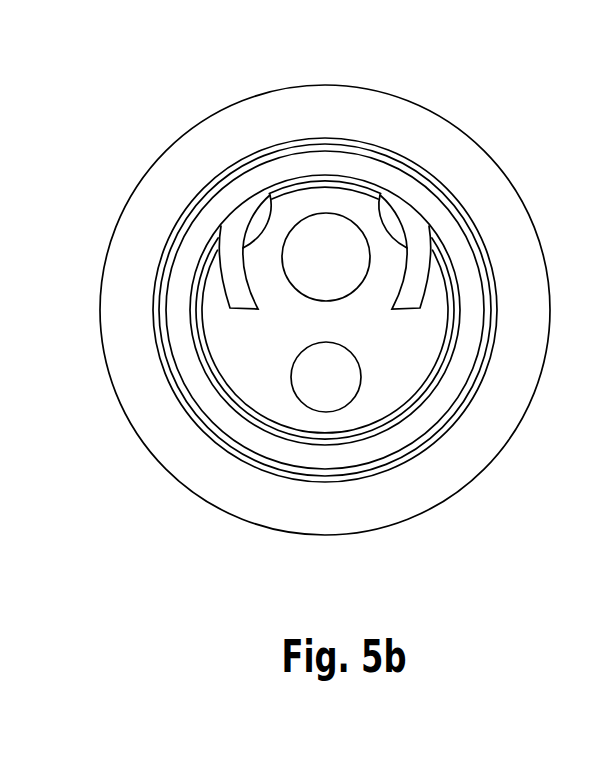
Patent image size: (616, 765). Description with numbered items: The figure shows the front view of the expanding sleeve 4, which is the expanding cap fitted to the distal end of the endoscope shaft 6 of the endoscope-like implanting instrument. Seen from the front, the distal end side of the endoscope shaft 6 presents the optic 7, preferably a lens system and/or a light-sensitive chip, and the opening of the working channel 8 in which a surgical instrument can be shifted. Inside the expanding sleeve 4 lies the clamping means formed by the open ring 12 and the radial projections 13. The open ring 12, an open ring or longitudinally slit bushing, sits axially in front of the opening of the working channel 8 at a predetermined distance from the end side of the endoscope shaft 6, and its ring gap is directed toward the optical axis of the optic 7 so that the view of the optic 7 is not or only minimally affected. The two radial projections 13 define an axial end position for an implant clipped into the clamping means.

The expanding sleeve 4 is at (380, 107).
The endoscope shaft 6 is at (397, 257).
The optic 7 is at (319, 240).
The working channel 8 is at (328, 378).
The open ring 12 is at (242, 349).
The radial projections 13 is at (257, 400).